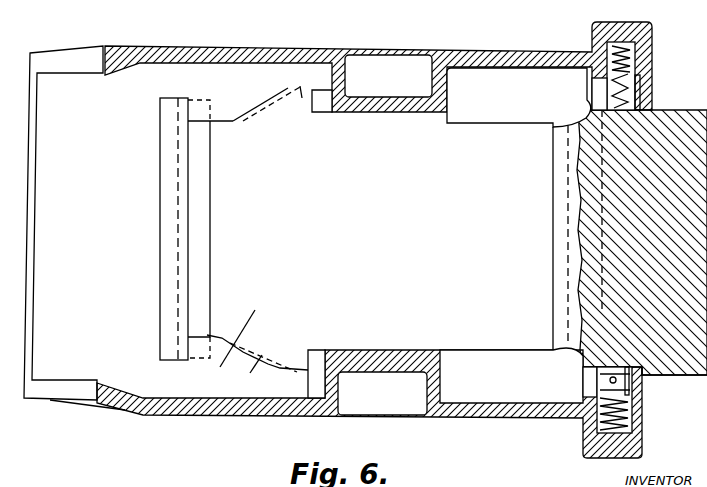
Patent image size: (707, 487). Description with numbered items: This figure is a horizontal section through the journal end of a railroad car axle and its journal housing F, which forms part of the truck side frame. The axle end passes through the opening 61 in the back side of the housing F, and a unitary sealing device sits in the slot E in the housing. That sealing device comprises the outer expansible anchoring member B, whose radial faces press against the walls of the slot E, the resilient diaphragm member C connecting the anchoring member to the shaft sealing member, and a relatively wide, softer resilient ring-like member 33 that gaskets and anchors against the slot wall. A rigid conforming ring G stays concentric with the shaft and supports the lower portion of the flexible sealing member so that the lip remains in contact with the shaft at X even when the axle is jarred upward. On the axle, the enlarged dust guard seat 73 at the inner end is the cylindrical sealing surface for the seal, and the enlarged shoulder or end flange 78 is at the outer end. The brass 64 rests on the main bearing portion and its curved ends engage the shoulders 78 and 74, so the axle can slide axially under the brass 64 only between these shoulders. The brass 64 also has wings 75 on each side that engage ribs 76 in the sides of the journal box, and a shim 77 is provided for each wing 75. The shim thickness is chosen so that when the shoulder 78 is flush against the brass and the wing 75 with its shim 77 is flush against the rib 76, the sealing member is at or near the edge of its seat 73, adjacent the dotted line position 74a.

The housing F is at (250, 48).
The shim 77 is at (345, 56).
The ribs 76 is at (380, 100).
The brass 64 is at (288, 125).
The wings 75 is at (308, 84).
The shoulder 78 is at (168, 175).
The shoulder 74 is at (578, 108).
The dotted line position 74a is at (612, 112).
The slot E is at (633, 45).
The opening 61 is at (640, 86).
The dust guard seat 73 is at (647, 107).
The lip contact point X is at (607, 367).
The ring G is at (644, 374).
The resilient diaphragm member C is at (630, 400).
The resilient ring-like member 33 is at (630, 420).
The outer expansible anchoring member B is at (602, 422).